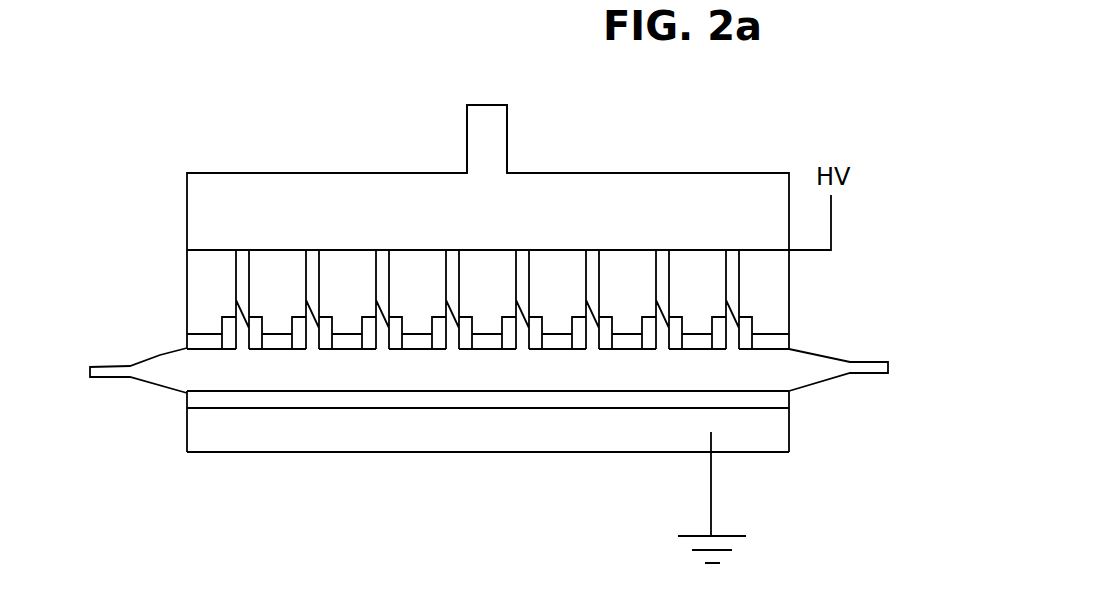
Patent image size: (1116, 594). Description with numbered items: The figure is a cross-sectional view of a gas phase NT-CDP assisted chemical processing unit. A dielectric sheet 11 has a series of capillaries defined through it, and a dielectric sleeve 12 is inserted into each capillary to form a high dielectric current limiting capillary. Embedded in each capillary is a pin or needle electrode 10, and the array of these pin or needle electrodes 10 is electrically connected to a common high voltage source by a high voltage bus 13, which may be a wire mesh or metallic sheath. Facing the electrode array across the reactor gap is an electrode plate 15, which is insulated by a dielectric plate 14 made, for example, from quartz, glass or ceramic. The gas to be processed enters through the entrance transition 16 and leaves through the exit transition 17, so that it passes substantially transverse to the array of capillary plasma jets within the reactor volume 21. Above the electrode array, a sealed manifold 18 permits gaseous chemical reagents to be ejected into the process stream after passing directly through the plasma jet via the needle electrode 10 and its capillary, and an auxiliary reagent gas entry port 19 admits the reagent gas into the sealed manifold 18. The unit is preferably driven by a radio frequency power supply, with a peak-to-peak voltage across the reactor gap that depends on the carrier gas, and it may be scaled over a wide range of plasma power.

The pin or needle electrode 10 is at (239, 260).
The dielectric sheet 11 is at (187, 340).
The dielectric sleeve 12 is at (631, 278).
The high voltage bus 13 is at (695, 248).
The dielectric plate 14 is at (187, 403).
The electrode plate 15 is at (304, 430).
The entrance transition 16 is at (165, 370).
The exit transition 17 is at (812, 355).
The sealed manifold 18 is at (302, 198).
The auxiliary reagent gas entry port 19 is at (488, 132).
The reactor volume 21 is at (532, 377).